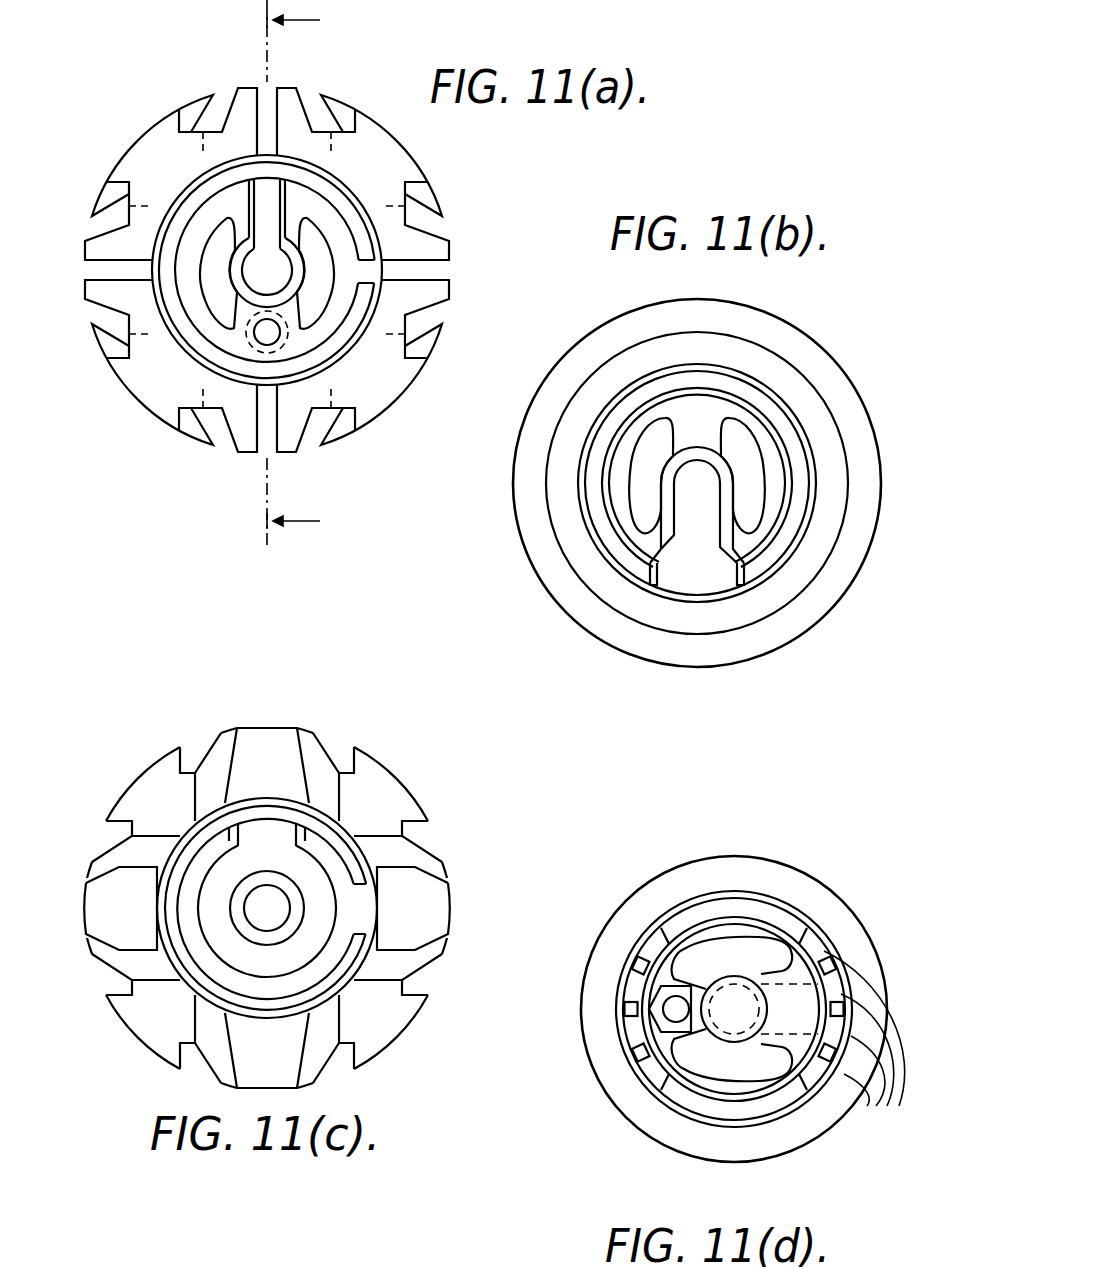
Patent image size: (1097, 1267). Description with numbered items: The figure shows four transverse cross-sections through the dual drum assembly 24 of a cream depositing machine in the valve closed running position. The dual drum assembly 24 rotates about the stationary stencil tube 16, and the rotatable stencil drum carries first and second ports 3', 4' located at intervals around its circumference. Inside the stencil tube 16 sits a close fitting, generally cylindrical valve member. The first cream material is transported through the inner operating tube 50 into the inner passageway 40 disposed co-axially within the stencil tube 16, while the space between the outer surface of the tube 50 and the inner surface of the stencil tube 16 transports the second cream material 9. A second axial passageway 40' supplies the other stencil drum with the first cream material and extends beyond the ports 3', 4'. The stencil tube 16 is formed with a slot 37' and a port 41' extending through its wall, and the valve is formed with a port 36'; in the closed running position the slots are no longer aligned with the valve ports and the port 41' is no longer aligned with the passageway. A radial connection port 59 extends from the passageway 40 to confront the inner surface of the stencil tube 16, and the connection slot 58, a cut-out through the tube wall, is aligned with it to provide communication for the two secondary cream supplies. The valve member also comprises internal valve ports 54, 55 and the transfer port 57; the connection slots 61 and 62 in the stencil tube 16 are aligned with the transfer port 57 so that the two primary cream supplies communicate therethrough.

In FIG. 11A, the first port 3' is at (267, 249).
In FIG. 11A, the second port 4' is at (267, 232).
In FIG. 11C, the second port 4' is at (267, 884).
In FIG. 11A, the second cream material 9 is at (305, 274).
In FIG. 11B, the stencil tube 16 is at (708, 466).
In FIG. 11C, the stencil tube 16 is at (242, 950).
In FIG. 11B, the dual drum assembly 24 is at (697, 463).
In FIG. 11C, the port 36' is at (280, 828).
In FIG. 11C, the slot 37' is at (331, 908).
In FIG. 11B, the inner passageway 40 is at (607, 534).
In FIG. 11D, the inner passageway 40 is at (759, 926).
In FIG. 11A, the second axial passageway 40' is at (163, 227).
In FIG. 11C, the second axial passageway 40' is at (176, 976).
In FIG. 11A, the port 41' is at (323, 270).
In FIG. 11A, the inner operating tube 50 is at (182, 266).
In FIG. 11C, the inner operating tube 50 is at (193, 850).
In FIG. 11D, the inner operating tube 50 is at (759, 1124).
In FIG. 11B, the internal valve port 54 is at (574, 491).
In FIG. 11D, the internal valve port 54 is at (710, 905).
In FIG. 11B, the internal valve port 55 is at (808, 439).
In FIG. 11D, the internal valve port 55 is at (692, 1111).
In FIG. 11D, the transfer port 57 is at (707, 974).
In FIG. 11B, the connection slot 58 is at (697, 550).
In FIG. 11B, the radial connection port 59 is at (620, 568).
In FIG. 11D, the connection slot 61 is at (678, 1022).
In FIG. 11D, the connection slot 62 is at (864, 1052).